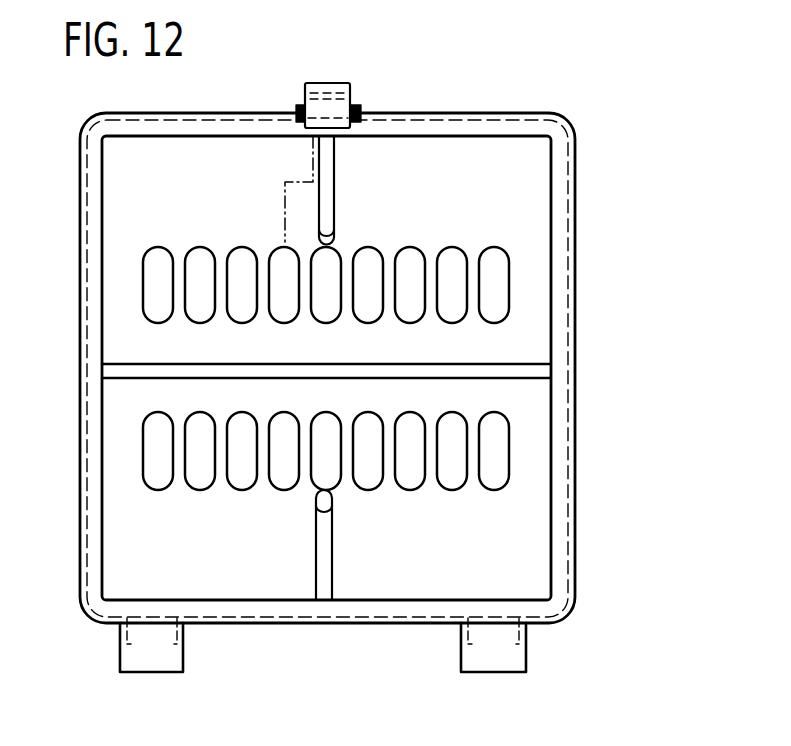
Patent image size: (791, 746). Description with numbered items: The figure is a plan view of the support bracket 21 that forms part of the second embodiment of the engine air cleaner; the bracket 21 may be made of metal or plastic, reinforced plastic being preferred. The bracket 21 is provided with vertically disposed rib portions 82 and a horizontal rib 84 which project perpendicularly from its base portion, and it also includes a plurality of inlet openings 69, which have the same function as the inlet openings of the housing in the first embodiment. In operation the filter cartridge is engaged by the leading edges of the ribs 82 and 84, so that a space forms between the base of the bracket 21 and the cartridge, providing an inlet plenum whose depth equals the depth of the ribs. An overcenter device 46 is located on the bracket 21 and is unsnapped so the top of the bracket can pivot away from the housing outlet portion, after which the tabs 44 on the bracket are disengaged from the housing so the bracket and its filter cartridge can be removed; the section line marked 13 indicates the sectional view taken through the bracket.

The support bracket 21 is at (580, 209).
The overcenter device 46 is at (338, 92).
The vertically disposed rib portions 82 is at (328, 197).
The inlet openings 69 is at (487, 263).
The horizontal rib 84 is at (519, 364).
The tabs 44 is at (160, 656).
The section line 13- 13 is at (335, 42).